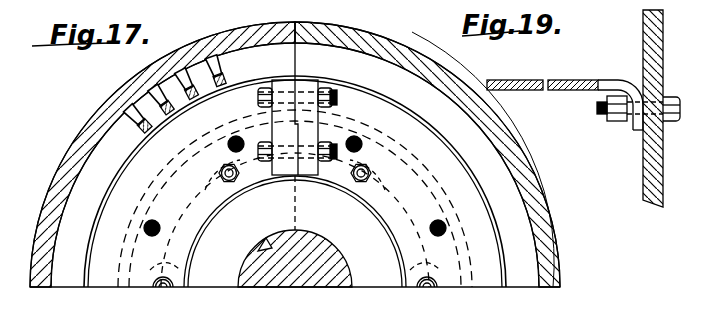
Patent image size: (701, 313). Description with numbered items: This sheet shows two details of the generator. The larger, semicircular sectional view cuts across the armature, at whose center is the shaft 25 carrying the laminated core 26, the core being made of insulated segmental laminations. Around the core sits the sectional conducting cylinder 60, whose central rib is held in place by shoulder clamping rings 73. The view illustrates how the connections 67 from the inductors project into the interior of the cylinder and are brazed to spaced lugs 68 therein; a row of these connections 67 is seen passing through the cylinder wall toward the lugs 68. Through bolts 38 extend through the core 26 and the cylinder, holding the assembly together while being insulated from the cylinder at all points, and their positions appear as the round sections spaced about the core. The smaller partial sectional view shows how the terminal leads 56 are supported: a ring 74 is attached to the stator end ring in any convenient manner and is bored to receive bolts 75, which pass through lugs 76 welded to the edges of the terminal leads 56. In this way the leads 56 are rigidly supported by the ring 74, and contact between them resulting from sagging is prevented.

In FIG. 17, the cylinder 60 is at (88, 142).
In FIG. 17, the lugs 68 is at (158, 95).
In FIG. 17, the connections 67 is at (176, 112).
In FIG. 17, the through bolts 38 is at (161, 230).
In FIG. 17, the laminated core 26 is at (367, 223).
In FIG. 17, the shaft 25 is at (322, 260).
In FIG. 17, the shoulder clamping rings 73 is at (483, 236).
In FIG. 19, the terminal leads 56 is at (572, 80).
In FIG. 19, the bolts 75 is at (597, 108).
In FIG. 19, the lugs 76 is at (628, 132).
In FIG. 19, the ring 74 is at (650, 181).